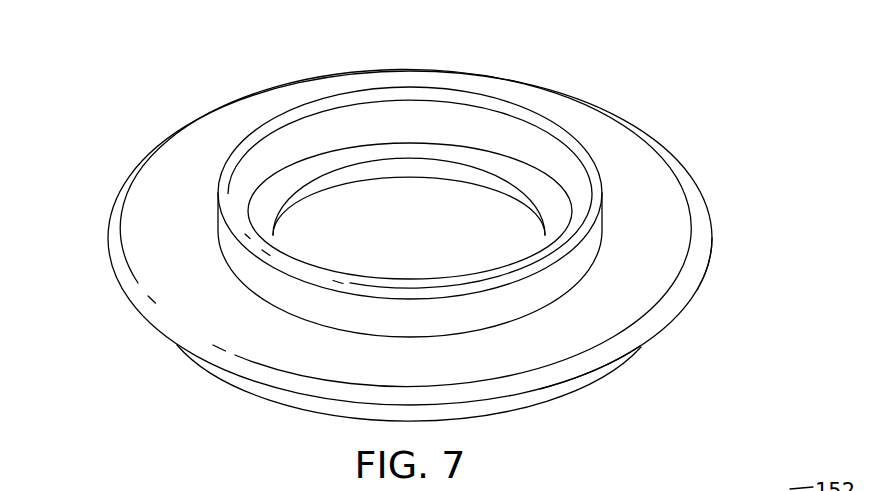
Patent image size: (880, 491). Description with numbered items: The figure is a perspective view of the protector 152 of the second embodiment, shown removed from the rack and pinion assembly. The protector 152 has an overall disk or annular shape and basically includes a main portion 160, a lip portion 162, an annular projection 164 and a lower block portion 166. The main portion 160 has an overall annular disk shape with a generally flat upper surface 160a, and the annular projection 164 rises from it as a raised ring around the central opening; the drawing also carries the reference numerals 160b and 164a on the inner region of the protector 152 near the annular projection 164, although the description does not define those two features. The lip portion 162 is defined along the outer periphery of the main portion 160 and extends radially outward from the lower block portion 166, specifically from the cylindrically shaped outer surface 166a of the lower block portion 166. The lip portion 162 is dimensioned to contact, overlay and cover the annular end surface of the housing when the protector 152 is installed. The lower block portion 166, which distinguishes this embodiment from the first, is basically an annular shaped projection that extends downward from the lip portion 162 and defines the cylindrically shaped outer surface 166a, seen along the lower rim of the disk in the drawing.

The protector 152 is at (663, 83).
The main portion 160 is at (638, 178).
The upper surface 160a is at (165, 190).
The inner bore surface 160b is at (527, 207).
The lip portion 162 is at (708, 206).
The annular projection 164 is at (505, 110).
The conical inner surface 164a is at (325, 135).
The lower block portion 166 is at (582, 378).
The outer surface 166a is at (525, 400).